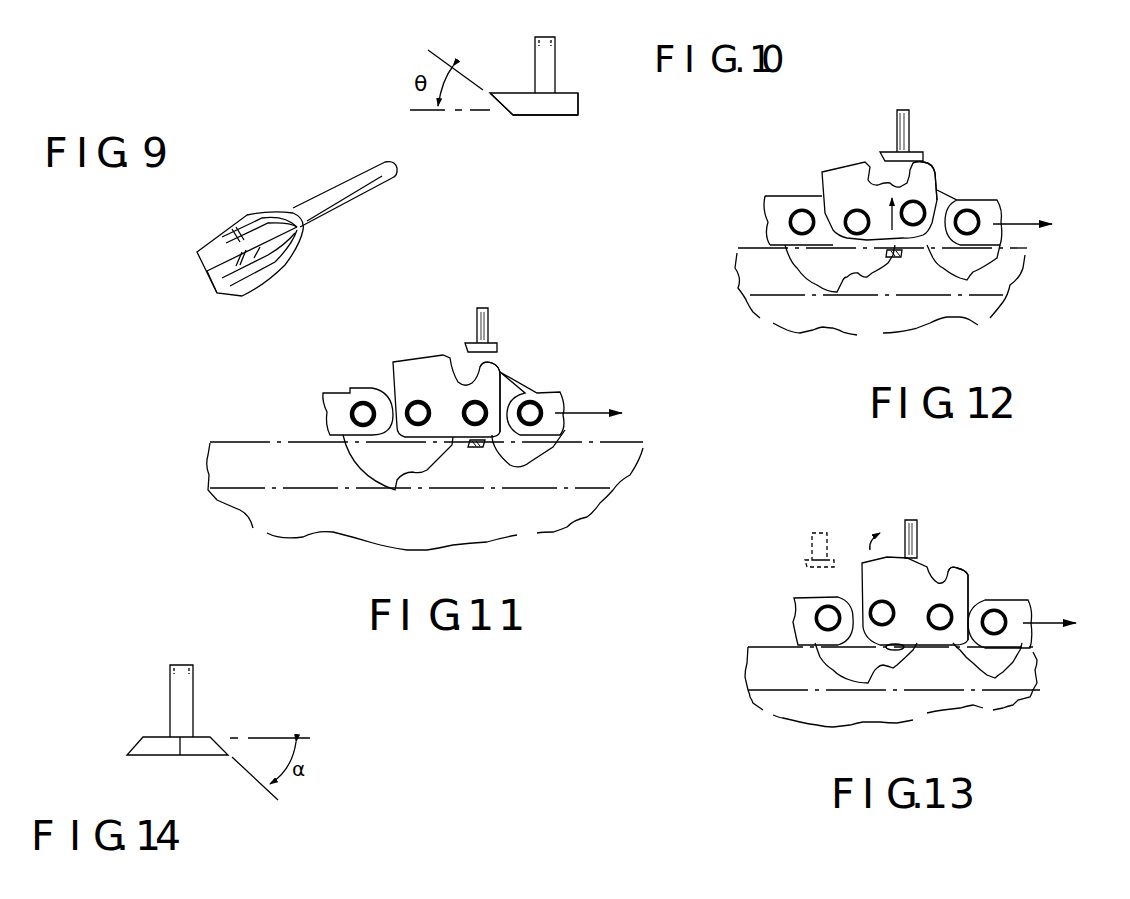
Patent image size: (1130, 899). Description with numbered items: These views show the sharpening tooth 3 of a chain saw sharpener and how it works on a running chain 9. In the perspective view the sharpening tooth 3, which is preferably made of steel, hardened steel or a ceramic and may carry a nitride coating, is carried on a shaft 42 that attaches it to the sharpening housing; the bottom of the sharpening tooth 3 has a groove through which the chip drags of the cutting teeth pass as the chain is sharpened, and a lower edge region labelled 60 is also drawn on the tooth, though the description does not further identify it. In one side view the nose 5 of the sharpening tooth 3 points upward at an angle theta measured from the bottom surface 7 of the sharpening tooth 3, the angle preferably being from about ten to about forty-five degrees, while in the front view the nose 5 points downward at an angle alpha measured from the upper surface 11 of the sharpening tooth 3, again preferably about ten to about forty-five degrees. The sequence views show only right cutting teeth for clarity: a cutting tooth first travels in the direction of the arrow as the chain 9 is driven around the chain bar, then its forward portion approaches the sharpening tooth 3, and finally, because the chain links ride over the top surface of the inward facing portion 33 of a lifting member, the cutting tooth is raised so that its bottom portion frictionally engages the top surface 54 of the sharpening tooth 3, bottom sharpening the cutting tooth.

In FIG. 9, the sharpening tooth 3 is at (193, 247).
In FIG. 10, the sharpening tooth 3 is at (522, 122).
In FIG. 13, the sharpening tooth 3 is at (797, 567).
In FIG. 14, the sharpening tooth 3 is at (118, 748).
In FIG. 10, the nose 5 is at (490, 92).
In FIG. 10, the bottom surface 7 is at (560, 118).
In FIG. 11, the chain 9 is at (310, 390).
In FIG. 10, the upper surface 11 is at (520, 90).
In FIG. 11, the inward facing portion 33 is at (473, 448).
In FIG. 12, the inward facing portion 33 is at (937, 262).
In FIG. 13, the inward facing portion 33 is at (892, 687).
In FIG. 9, the shaft 42 is at (328, 198).
In FIG. 10, the shaft 42 is at (548, 62).
In FIG. 14, the shaft 42 is at (172, 688).
In FIG. 10, the top surface 54 is at (572, 90).
In FIG. 9, the cutting edge 60 is at (207, 275).